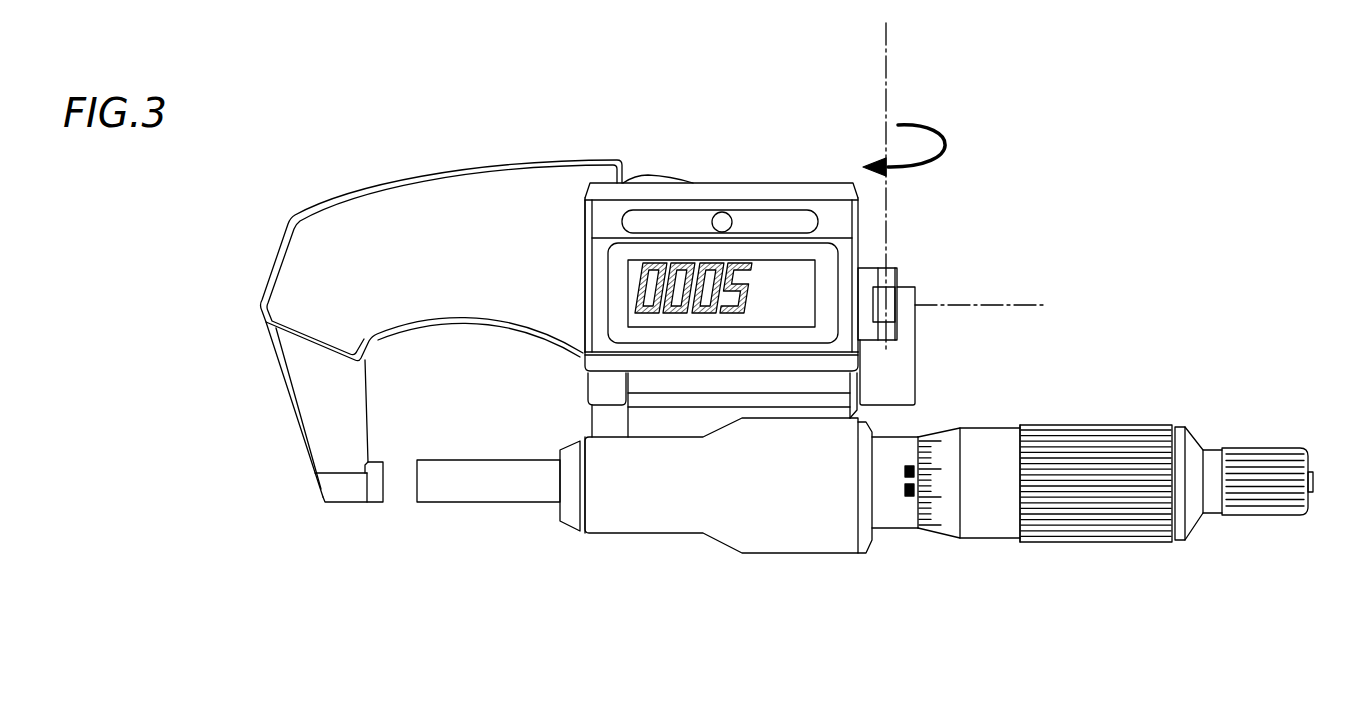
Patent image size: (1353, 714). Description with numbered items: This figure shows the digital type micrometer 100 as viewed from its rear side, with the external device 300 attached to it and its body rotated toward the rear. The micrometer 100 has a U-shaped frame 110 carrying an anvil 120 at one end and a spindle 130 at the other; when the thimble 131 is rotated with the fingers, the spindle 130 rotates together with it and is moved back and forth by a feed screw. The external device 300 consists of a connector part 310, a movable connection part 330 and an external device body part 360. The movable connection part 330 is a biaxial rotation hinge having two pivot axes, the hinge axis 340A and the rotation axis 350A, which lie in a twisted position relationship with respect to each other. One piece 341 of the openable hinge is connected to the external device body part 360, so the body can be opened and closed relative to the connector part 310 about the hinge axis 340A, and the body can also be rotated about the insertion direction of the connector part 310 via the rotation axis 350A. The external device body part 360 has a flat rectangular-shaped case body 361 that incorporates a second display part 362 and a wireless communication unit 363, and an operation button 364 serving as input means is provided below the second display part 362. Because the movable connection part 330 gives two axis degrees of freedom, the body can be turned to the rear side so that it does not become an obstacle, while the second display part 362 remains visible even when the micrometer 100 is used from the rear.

The micrometer 100 is at (706, 576).
The U-shaped frame 110 is at (393, 193).
The anvil 120 is at (373, 507).
The spindle 130 is at (478, 497).
The thimble 131 is at (1067, 427).
The external device 300 is at (720, 212).
The connector part 310 is at (908, 378).
The movable connection part 330 is at (900, 273).
The one piece of the openable hinge 341 is at (877, 268).
The hinge axis 340A is at (886, 50).
The rotation axis 350A is at (1020, 303).
The external device body part 360 is at (825, 188).
The case body 361 is at (670, 183).
The second display part 362 is at (783, 268).
The wireless communication unit 363 is at (602, 197).
The operation button 364 is at (722, 211).